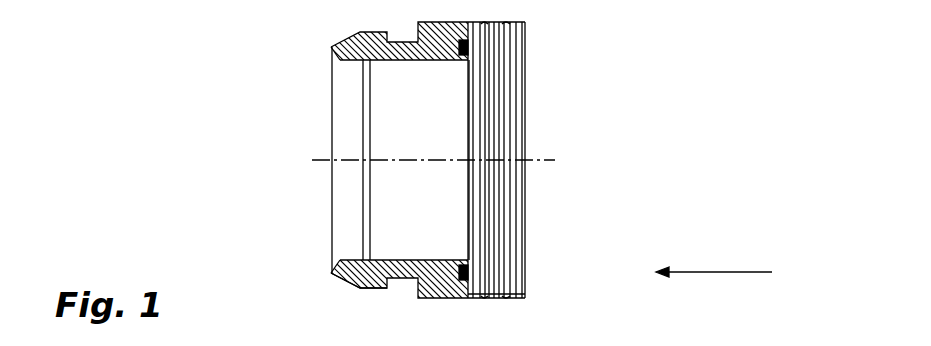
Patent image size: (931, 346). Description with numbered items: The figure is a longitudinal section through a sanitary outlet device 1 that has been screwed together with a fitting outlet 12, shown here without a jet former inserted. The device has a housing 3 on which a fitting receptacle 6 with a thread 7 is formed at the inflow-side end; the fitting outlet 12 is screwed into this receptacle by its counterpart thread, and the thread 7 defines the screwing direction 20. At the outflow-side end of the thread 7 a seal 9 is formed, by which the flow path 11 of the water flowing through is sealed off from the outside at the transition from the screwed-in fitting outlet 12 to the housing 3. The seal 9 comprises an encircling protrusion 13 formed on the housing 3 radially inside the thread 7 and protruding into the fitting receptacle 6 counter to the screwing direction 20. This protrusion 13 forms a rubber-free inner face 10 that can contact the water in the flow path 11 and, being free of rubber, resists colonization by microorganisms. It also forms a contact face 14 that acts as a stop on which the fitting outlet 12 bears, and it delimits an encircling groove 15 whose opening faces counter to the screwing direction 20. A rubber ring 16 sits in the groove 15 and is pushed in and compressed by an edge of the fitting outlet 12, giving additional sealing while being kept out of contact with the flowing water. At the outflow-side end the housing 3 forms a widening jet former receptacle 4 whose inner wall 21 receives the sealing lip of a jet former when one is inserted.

The sanitary outlet device 1 is at (687, 108).
The housing 3 is at (331, 45).
The jet former receptacle 4 is at (413, 170).
The fitting receptacle 6 is at (522, 291).
The thread 7 is at (522, 32).
The seal 9 is at (330, 263).
The rubber-free inner face 10 is at (468, 176).
The flow path 11 is at (348, 323).
The fitting outlet 12 is at (497, 143).
The encircling protrusion 13 is at (455, 58).
The contact face 14 is at (473, 54).
The encircling groove 15 is at (335, 50).
The rubber ring 16 is at (368, 280).
The screwing direction 20 is at (710, 162).
The inner wall 21 is at (408, 228).